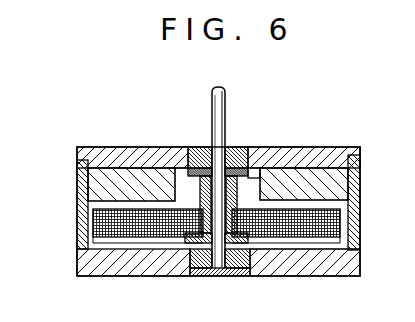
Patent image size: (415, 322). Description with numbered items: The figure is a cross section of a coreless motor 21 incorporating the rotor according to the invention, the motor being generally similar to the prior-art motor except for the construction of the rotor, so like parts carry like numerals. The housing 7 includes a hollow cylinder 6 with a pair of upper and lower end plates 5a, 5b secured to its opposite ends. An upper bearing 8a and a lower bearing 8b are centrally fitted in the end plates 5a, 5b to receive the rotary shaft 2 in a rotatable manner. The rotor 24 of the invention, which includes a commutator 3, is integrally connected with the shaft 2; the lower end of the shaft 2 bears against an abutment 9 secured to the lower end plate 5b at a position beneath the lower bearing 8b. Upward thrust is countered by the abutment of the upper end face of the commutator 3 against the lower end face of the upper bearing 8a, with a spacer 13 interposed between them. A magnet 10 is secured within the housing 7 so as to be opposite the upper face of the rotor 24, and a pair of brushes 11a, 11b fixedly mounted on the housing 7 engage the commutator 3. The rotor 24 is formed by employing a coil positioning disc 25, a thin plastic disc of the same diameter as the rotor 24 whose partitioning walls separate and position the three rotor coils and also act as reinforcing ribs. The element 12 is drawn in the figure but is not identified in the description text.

The rotary shaft 2 is at (221, 101).
The commutator 3 is at (196, 190).
The upper end plate 5a is at (102, 152).
The lower end plate 5b is at (133, 262).
The hollow cylinder 6 is at (82, 217).
The housing 7 is at (72, 203).
The upper bearing 8a is at (247, 150).
The lower bearing 8b is at (241, 276).
The abutment 9 is at (200, 276).
The magnet 10 is at (334, 182).
The brush 11a is at (273, 152).
The brush 11b is at (181, 152).
The bottom plate 12 is at (204, 276).
The spacer 13 is at (257, 166).
The coreless motor 21 is at (330, 131).
The rotor 24 is at (331, 220).
The coil positioning disc 25 is at (320, 250).